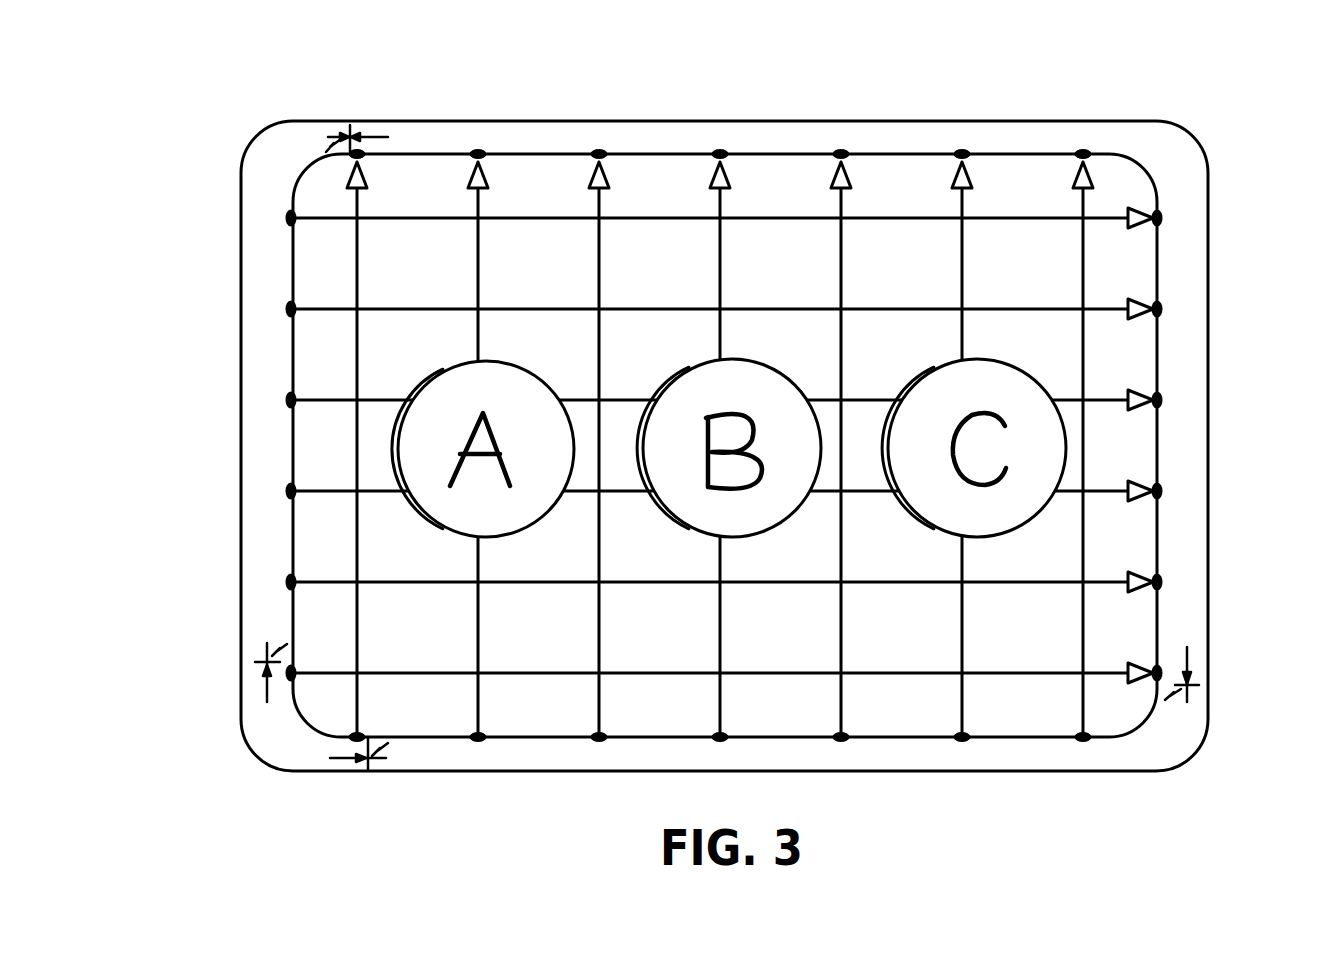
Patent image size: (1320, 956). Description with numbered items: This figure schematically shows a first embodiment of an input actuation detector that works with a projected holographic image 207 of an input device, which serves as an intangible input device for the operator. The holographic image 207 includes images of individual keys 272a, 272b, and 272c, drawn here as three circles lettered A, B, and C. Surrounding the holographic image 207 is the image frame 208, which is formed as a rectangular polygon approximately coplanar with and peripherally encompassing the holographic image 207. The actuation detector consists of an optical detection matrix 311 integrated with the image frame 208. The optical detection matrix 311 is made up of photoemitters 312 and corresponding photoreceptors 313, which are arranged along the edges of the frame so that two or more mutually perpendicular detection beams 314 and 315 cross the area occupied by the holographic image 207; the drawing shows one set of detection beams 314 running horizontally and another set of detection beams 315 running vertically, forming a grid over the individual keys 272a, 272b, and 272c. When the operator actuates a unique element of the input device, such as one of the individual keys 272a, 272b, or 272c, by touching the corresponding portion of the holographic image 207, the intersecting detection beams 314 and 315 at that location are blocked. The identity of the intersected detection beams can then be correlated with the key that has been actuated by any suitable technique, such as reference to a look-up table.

The image frame 208 is at (1200, 137).
The holographic image 207 is at (1128, 445).
The optical detection matrix 311 is at (740, 280).
The detection beam 314 is at (320, 480).
The detection beam 315 is at (1068, 165).
The photoreceptor 313 is at (370, 137).
The photoemitter 312 is at (264, 682).
The individual key 272a is at (508, 504).
The individual key 272b is at (733, 504).
The individual key 272c is at (1018, 504).